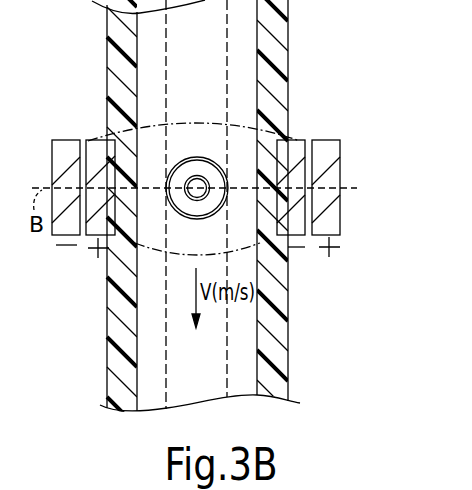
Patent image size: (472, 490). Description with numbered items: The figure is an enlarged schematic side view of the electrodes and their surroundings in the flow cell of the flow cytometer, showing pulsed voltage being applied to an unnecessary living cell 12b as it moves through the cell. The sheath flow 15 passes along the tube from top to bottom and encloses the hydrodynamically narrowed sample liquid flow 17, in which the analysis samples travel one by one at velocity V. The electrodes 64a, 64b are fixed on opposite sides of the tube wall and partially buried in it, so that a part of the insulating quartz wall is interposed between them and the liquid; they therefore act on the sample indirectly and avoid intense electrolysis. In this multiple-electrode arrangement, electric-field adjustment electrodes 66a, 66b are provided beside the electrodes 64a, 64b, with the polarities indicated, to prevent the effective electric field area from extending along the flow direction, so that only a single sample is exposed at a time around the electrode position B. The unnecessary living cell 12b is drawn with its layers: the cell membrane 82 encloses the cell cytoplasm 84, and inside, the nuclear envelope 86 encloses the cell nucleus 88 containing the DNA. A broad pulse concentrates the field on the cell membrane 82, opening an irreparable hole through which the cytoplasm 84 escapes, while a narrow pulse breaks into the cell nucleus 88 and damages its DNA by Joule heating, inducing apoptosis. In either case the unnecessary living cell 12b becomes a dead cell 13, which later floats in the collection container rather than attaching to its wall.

The dead cell 13 is at (284, 110).
The unnecessary living cell 12b is at (284, 112).
The cell membrane 82 is at (220, 157).
The cell cytoplasm 84 is at (210, 170).
The nuclear envelope 86 is at (202, 176).
The cell nucleus 88 is at (196, 176).
The electrode 64a is at (102, 148).
The electric-field adjustment electrode 66a is at (68, 148).
The electrode 64b is at (286, 148).
The electric-field adjustment electrode 66b is at (320, 148).
The sample liquid flow 17 is at (207, 338).
The sheath flow 15 is at (250, 357).